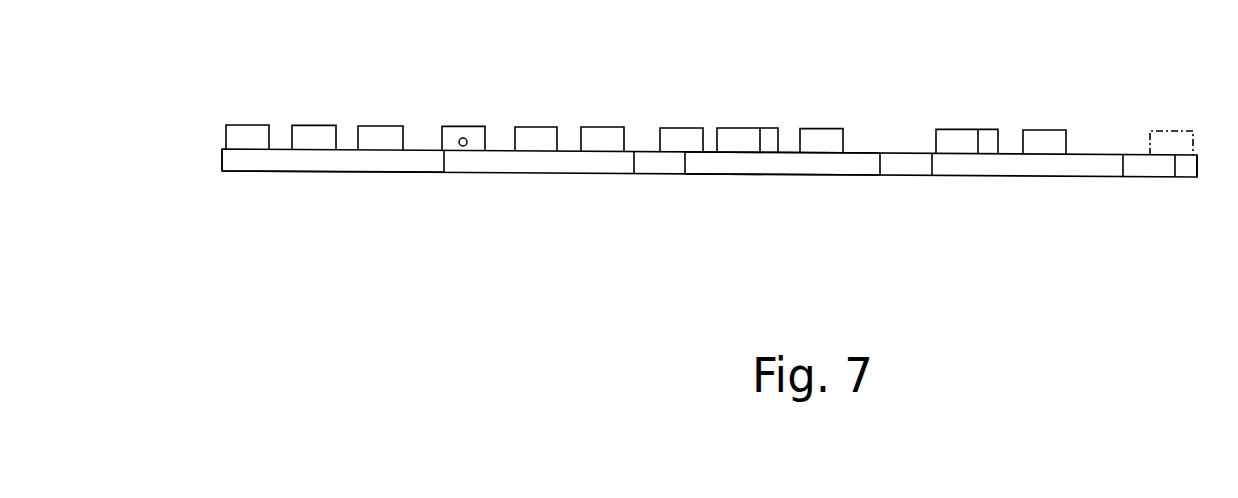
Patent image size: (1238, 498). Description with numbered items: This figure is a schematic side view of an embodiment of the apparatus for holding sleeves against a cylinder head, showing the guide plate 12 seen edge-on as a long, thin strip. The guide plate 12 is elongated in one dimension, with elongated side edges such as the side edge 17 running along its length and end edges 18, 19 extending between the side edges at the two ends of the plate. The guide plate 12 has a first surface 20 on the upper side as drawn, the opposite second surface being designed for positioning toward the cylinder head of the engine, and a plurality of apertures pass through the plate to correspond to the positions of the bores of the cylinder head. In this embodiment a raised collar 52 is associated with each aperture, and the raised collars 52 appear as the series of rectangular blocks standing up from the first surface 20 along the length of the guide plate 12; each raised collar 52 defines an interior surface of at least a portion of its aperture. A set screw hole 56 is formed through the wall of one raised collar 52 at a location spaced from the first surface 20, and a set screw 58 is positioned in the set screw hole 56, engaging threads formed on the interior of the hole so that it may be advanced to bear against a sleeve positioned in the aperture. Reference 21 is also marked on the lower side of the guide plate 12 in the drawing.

The guide plate 12 is at (709, 202).
The side edge 17 is at (333, 231).
The end edge 18 is at (183, 196).
The end edge 19 is at (1215, 199).
The first surface 20 is at (826, 113).
The bottom surface of substrate segment 21 is at (825, 215).
The raised collar 52 is at (581, 102).
The set screw hole 56 is at (506, 91).
The set screw 58 is at (484, 179).